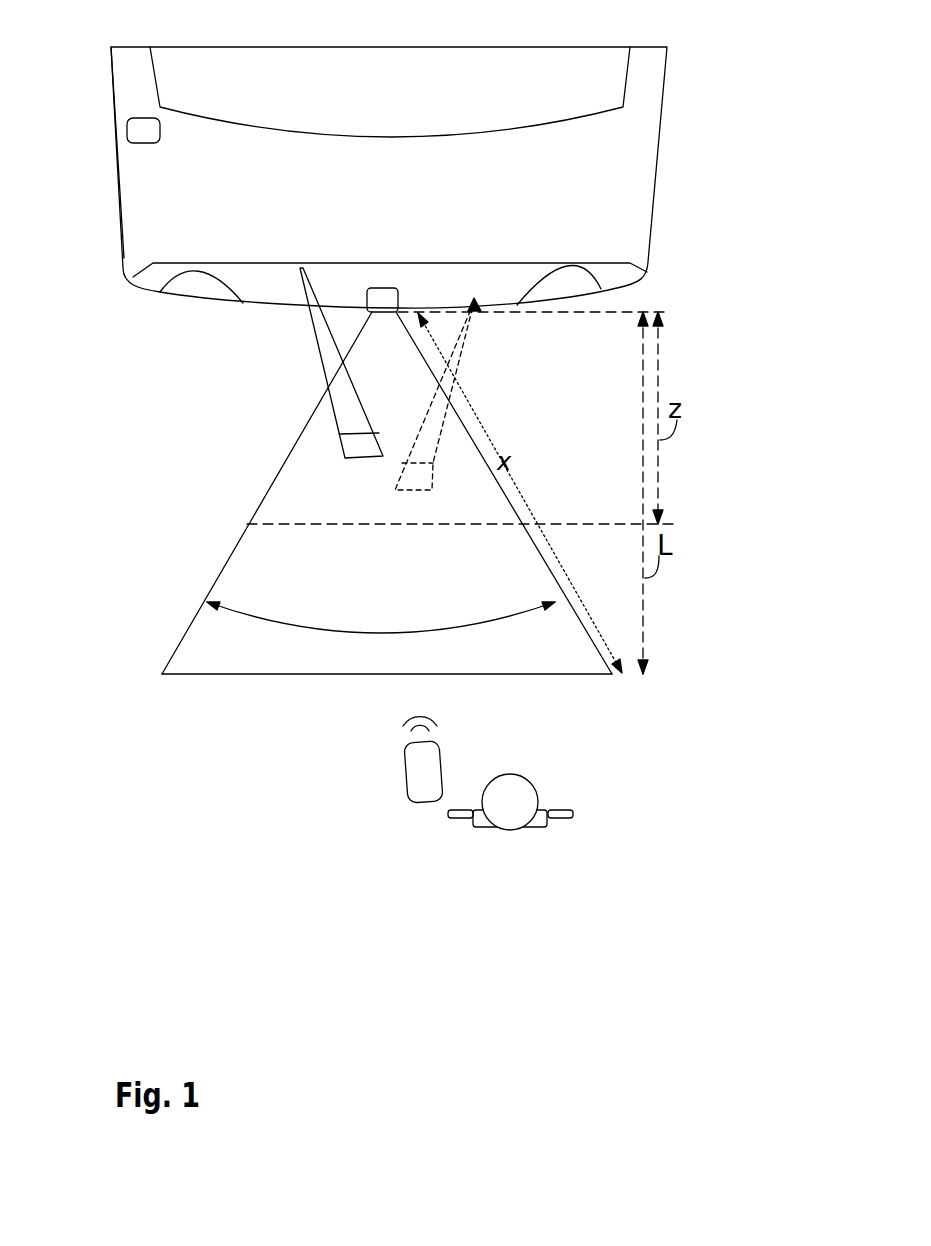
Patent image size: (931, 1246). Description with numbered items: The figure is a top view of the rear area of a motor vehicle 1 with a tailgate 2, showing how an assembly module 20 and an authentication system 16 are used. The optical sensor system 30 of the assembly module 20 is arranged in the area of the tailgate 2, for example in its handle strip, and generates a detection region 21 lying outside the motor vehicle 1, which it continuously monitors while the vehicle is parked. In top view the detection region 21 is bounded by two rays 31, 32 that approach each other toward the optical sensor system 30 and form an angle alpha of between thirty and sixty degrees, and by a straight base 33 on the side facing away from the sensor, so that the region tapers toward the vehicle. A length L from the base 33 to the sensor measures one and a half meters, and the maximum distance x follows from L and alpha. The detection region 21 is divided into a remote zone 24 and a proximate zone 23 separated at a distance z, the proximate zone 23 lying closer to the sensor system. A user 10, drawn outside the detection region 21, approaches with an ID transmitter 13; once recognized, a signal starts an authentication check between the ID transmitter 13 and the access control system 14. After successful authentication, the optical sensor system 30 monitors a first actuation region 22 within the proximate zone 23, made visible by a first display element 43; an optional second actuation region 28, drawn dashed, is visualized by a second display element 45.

The motor vehicle 1 is at (692, 110).
The tailgate 2 is at (630, 192).
The user 10 is at (586, 819).
The ID transmitter 13 is at (427, 778).
The access control system 14 is at (140, 130).
The authentication system 16 is at (98, 207).
The assembly module 20 is at (227, 357).
The detection region 21 is at (413, 530).
The first actuation region 22 is at (357, 450).
The proximate zone 23 is at (312, 488).
The remote zone 24 is at (265, 570).
The second actuation region 28 is at (417, 480).
The optical sensor system 30 is at (370, 301).
The ray 31 is at (175, 647).
The ray 32 is at (577, 625).
The base 33 is at (252, 675).
The first display element 43 is at (300, 268).
The second display element 45 is at (484, 310).